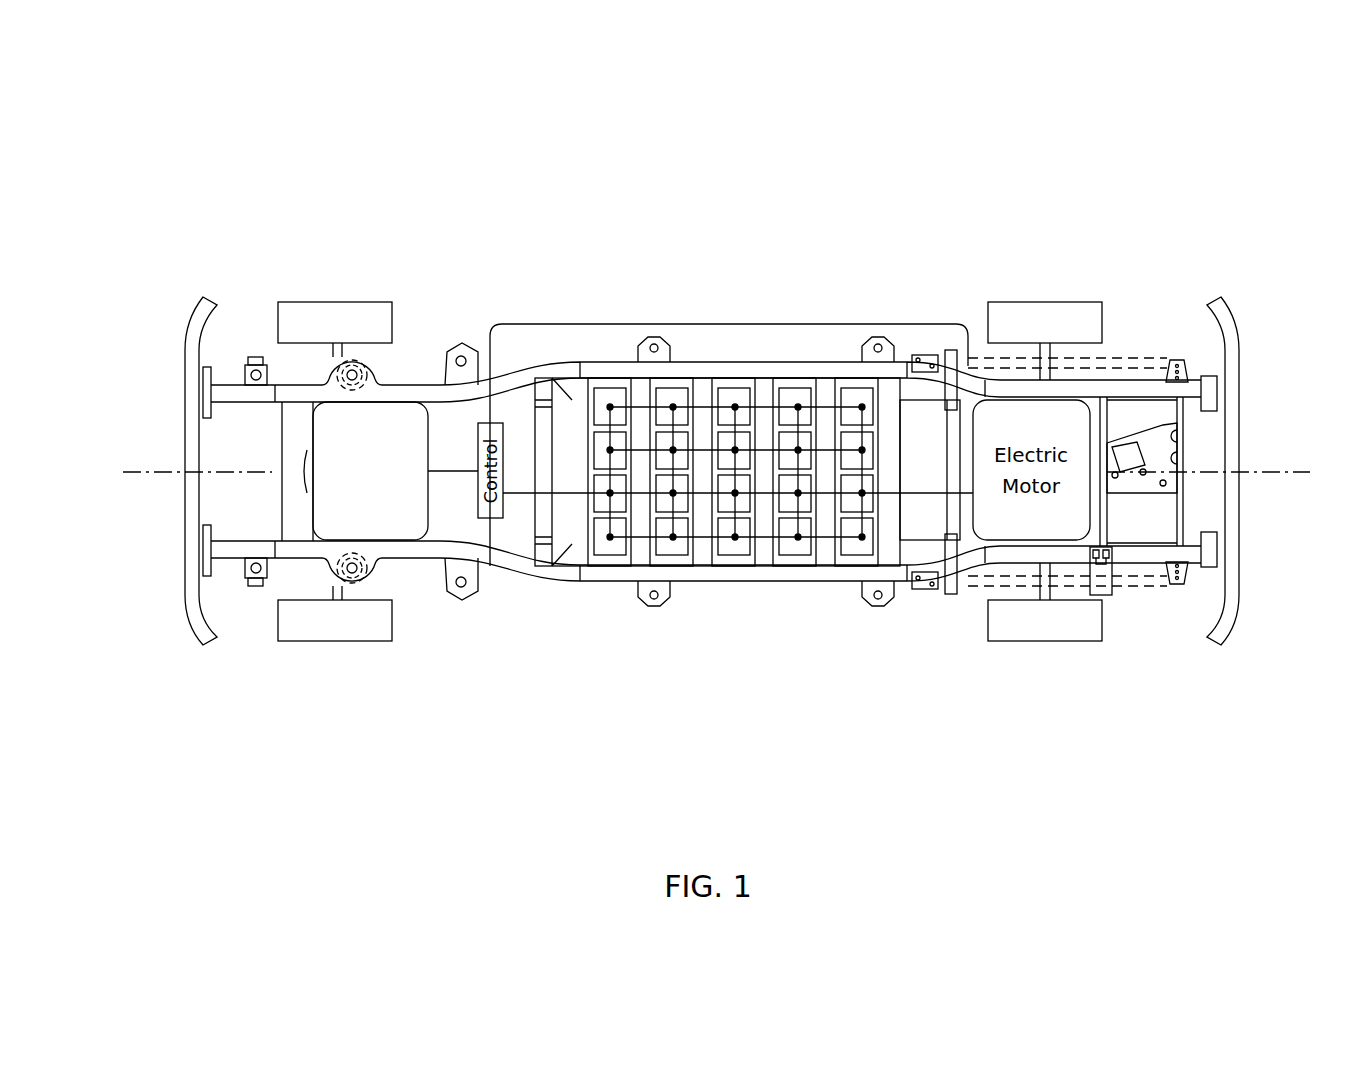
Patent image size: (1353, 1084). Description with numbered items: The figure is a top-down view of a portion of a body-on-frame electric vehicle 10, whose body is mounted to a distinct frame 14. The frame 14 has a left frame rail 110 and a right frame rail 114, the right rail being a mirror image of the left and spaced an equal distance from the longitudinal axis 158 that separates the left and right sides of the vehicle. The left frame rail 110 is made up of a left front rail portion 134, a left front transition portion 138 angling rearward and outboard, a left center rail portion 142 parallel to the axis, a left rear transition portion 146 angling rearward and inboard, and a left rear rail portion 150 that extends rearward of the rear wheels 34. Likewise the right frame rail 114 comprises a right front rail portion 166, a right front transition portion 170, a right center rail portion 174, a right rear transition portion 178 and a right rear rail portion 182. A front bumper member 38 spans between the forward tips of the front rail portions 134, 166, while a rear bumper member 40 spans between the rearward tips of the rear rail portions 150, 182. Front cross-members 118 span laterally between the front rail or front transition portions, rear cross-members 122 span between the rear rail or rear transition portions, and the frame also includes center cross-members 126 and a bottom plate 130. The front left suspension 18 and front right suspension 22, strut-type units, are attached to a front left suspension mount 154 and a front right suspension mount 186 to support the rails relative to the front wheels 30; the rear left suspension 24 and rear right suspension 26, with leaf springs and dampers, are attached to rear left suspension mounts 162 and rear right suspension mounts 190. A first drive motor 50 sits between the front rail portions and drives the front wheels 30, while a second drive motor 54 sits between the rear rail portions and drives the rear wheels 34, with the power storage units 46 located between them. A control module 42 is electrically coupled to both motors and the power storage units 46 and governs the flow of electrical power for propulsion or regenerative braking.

The body-on-frame electric vehicle 10 is at (560, 162).
The frame 14 is at (572, 605).
The front left suspension 18 is at (380, 568).
The front right suspension 22 is at (367, 377).
The rear left suspension 24 is at (1148, 586).
The rear right suspension 26 is at (1140, 358).
The front wheels 30 is at (297, 302).
The rear wheels 34 is at (1015, 302).
The front bumper member 38 is at (188, 360).
The rear bumper member 40 is at (1228, 357).
The control module 42 is at (490, 566).
The power storage units 46 is at (612, 583).
The first drive motor 50 is at (322, 525).
The second drive motor 54 is at (1107, 510).
The left frame rail 110 is at (530, 582).
The right frame rail 114 is at (543, 368).
The front cross-members 118 is at (295, 478).
The rear cross-members 122 is at (1183, 416).
The center cross-members 126 is at (760, 555).
The bottom plate 130 is at (845, 560).
The left front rail portion 134 is at (287, 550).
The left front transition portion 138 is at (512, 582).
The left center rail portion 142 is at (712, 581).
The left rear transition portion 146 is at (913, 589).
The left rear rail portion 150 is at (1103, 595).
The front left suspension mount 154 is at (363, 585).
The longitudinal axis 158 is at (150, 467).
The rear left suspension mounts 162 is at (952, 594).
The right front rail portion 166 is at (287, 392).
The right front transition portion 170 is at (483, 382).
The right center rail portion 174 is at (752, 375).
The right rear transition portion 178 is at (913, 377).
The right rear rail portion 182 is at (1127, 383).
The front right suspension mount 186 is at (357, 358).
The rear right suspension mounts 190 is at (948, 350).